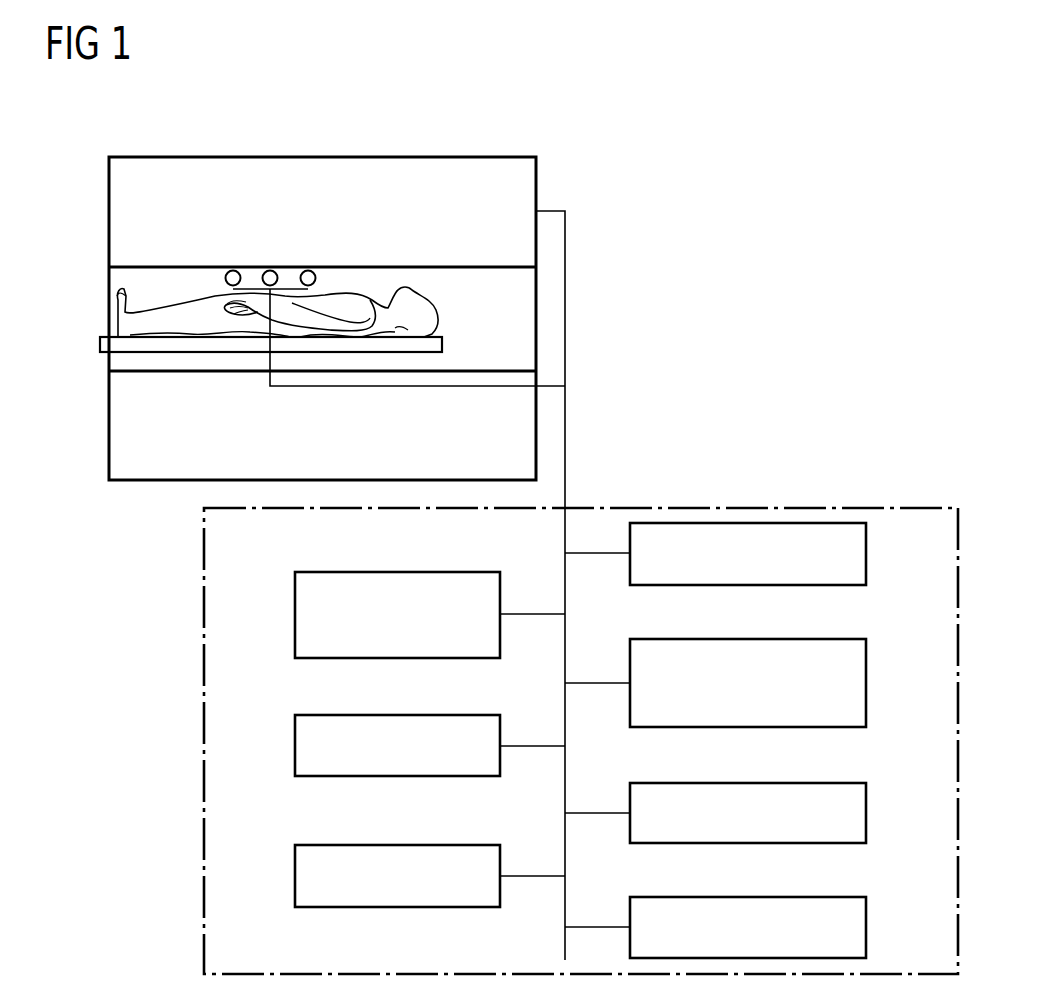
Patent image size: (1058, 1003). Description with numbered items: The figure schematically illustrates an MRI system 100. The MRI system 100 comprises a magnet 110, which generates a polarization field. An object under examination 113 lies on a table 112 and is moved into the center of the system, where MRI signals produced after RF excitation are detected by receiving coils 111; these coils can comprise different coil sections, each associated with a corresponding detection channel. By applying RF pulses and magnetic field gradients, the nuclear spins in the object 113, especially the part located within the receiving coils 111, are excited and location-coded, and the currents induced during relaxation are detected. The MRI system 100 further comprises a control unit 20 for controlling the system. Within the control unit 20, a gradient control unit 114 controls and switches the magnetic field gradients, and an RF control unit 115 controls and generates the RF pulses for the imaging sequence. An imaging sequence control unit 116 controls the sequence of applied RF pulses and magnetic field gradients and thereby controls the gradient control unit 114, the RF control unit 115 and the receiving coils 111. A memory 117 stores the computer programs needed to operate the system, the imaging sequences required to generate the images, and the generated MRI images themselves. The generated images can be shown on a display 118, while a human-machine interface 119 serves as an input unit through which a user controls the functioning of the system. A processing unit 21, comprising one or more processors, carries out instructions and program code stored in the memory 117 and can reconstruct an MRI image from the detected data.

The MRI system 100 is at (834, 120).
The magnet 110 is at (318, 157).
The receiving coils 111 is at (308, 267).
The table 112 is at (442, 347).
The object under examination 113 is at (112, 318).
The gradient control unit 114 is at (866, 553).
The RF control unit 115 is at (294, 616).
The imaging sequence control unit 116 is at (866, 683).
The memory 117 is at (294, 746).
The display 118 is at (866, 813).
The human-machine interface 119 is at (294, 876).
The control unit 20 is at (718, 506).
The processing unit 21 is at (866, 927).